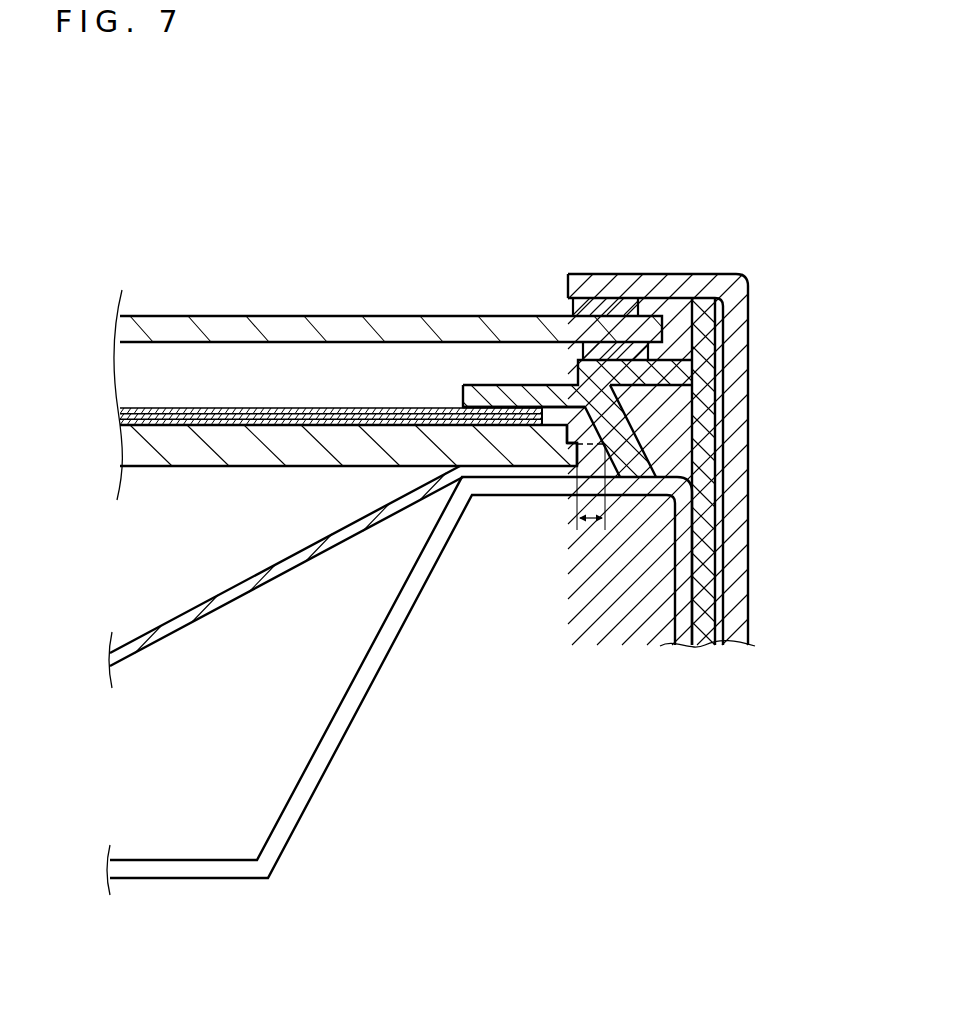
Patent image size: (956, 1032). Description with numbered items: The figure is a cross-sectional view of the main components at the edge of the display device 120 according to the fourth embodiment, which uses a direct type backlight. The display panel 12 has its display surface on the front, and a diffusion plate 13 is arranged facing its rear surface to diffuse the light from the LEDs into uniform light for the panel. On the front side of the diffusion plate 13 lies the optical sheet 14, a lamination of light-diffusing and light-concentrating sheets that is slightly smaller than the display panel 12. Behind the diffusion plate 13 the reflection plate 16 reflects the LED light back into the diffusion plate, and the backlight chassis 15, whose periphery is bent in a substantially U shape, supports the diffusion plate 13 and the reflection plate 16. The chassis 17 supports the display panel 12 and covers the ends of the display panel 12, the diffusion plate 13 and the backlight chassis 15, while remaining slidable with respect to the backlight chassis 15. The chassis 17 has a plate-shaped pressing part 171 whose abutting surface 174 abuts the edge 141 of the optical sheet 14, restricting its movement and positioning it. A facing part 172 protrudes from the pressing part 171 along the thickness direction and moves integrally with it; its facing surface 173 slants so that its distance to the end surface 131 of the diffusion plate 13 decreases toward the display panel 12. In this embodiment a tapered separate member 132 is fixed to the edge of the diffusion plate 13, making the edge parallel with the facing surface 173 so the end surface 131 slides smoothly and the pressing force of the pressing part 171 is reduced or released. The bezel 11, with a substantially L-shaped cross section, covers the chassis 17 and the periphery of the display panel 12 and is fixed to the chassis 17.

The display device 120 is at (843, 90).
The bezel 11 is at (743, 275).
The display panel 12 is at (232, 315).
The diffusion plate 13 is at (175, 468).
The end surface 131 is at (578, 454).
The tapered separate member 132 is at (585, 408).
The optical sheet 14 is at (120, 425).
The edge 141 is at (463, 385).
The backlight chassis 15 is at (188, 880).
The reflection plate 16 is at (185, 628).
The chassis 17 is at (718, 579).
The pressing part 171 is at (492, 390).
The facing part 172 is at (630, 431).
The facing surface 173 is at (610, 455).
The abutting surface 174 is at (523, 406).